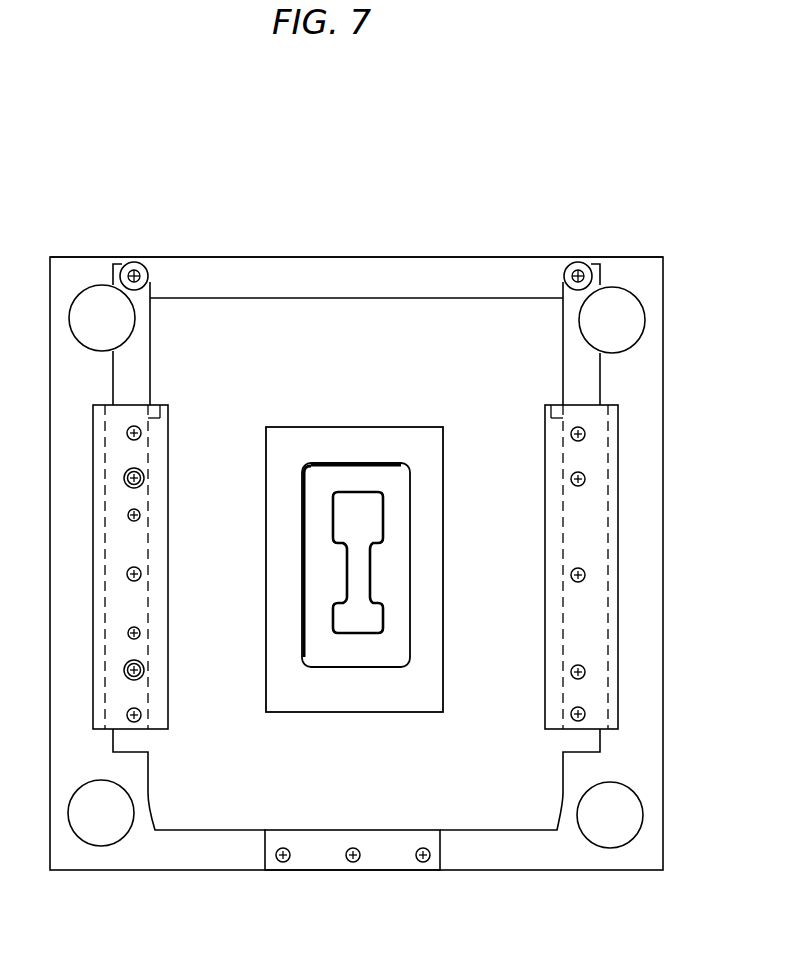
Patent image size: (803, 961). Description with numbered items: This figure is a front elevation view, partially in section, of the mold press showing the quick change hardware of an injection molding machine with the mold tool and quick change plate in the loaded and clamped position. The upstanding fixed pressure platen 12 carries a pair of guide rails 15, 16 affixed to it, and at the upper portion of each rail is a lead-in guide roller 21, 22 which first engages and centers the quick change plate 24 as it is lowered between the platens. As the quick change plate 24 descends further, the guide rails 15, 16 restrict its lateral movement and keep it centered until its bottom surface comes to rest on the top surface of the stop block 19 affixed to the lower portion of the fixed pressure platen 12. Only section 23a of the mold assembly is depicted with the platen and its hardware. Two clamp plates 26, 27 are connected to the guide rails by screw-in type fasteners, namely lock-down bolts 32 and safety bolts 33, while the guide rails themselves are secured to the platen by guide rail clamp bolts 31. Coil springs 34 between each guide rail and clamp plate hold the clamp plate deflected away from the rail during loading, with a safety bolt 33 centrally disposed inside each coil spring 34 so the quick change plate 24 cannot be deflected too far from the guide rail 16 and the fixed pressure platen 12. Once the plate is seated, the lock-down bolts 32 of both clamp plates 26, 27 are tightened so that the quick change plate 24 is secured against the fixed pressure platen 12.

The fixed pressure platen 12 is at (663, 257).
The guide rail 15 is at (150, 355).
The guide rail 16 is at (563, 332).
The stop block 19 is at (373, 870).
The lead-in guide roller 21 is at (134, 262).
The lead-in guide roller 22 is at (578, 262).
The section of the mold assembly 23a is at (443, 622).
The quick change plate 24 is at (395, 298).
The clamp plate 26 is at (168, 660).
The clamp plate 27 is at (618, 643).
The guide rail clamp bolt 31 is at (146, 517).
The lock-down bolt 32 is at (571, 436).
The safety bolt 33 is at (571, 477).
The coil spring 34 is at (143, 473).